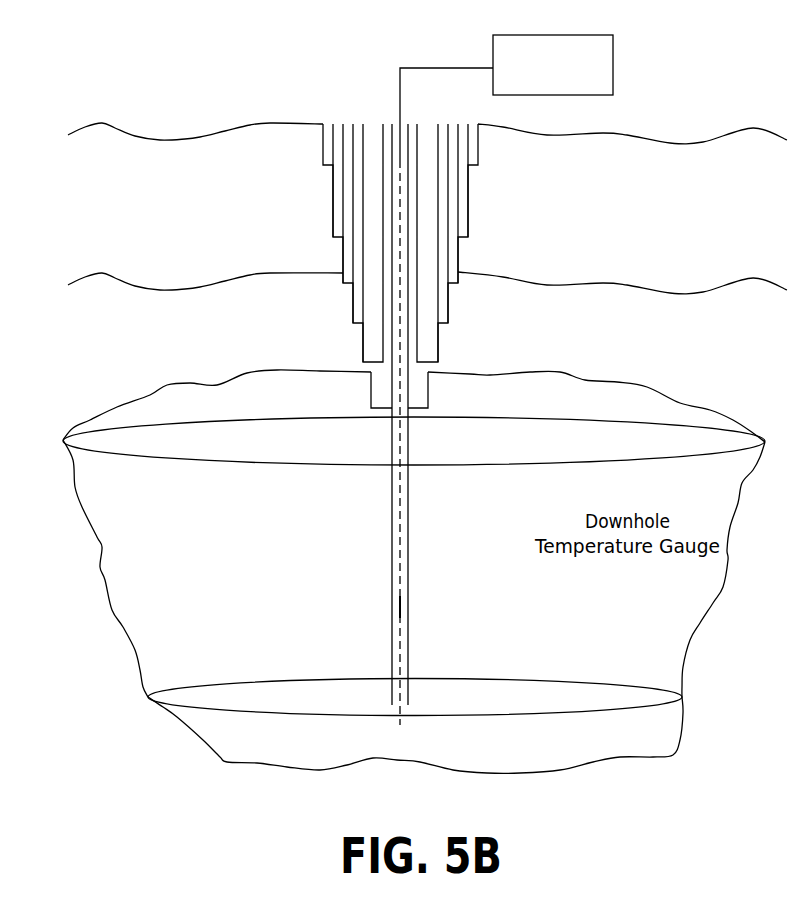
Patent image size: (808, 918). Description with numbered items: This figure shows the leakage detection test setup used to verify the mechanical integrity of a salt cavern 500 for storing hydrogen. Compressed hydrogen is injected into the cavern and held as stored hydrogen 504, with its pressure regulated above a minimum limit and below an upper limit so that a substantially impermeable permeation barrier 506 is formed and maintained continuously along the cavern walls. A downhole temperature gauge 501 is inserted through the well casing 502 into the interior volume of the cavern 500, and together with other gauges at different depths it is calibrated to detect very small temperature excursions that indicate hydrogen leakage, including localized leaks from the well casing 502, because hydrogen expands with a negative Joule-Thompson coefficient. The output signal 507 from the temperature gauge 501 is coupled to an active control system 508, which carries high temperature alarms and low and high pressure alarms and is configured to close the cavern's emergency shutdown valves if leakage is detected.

The salt cavern 500 is at (675, 388).
The temperature gauge 501 is at (402, 607).
The well casing 502 is at (405, 493).
The stored hydrogen 504 is at (554, 610).
The substantially impermeable permeation barrier 506 is at (157, 395).
The output signal 507 is at (442, 67).
The active control system 508 is at (571, 76).